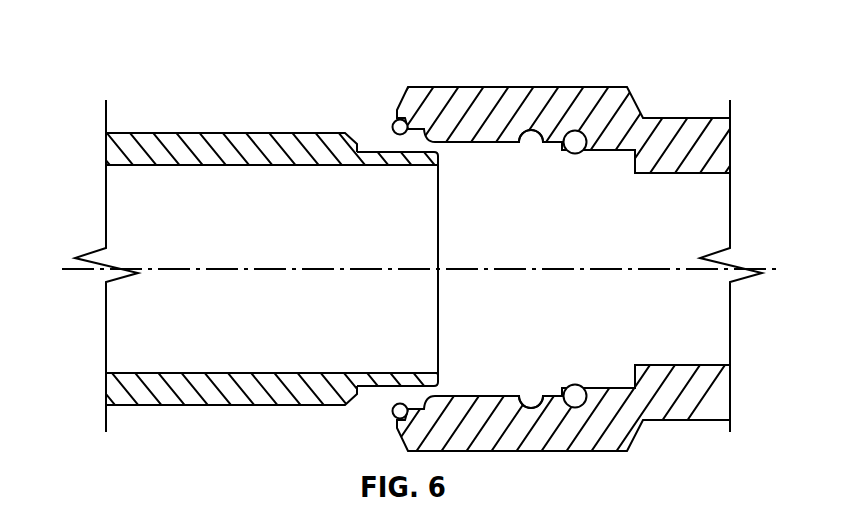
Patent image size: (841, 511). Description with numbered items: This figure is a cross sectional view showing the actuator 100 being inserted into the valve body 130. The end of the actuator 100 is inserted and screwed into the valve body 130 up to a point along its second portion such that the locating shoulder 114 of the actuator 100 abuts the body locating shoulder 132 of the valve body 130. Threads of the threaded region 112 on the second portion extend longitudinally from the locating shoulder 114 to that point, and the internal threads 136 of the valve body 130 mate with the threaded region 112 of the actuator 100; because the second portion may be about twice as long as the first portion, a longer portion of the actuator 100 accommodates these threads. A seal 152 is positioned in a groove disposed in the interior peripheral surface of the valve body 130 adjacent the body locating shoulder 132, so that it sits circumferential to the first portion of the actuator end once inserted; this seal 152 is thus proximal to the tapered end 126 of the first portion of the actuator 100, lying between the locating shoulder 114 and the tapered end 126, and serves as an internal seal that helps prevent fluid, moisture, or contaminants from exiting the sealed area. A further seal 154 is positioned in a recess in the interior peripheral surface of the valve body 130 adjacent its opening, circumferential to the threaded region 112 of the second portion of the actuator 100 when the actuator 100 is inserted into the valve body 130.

The actuator 100 is at (191, 117).
The locating shoulder 114 is at (346, 164).
The threaded region 112 is at (381, 164).
The tapered end 126 is at (430, 161).
The valve body 130 is at (593, 85).
The internal threads 136 is at (485, 144).
The body locating shoulder 132 is at (531, 145).
The seal 152 is at (555, 132).
The seal 154 is at (386, 121).